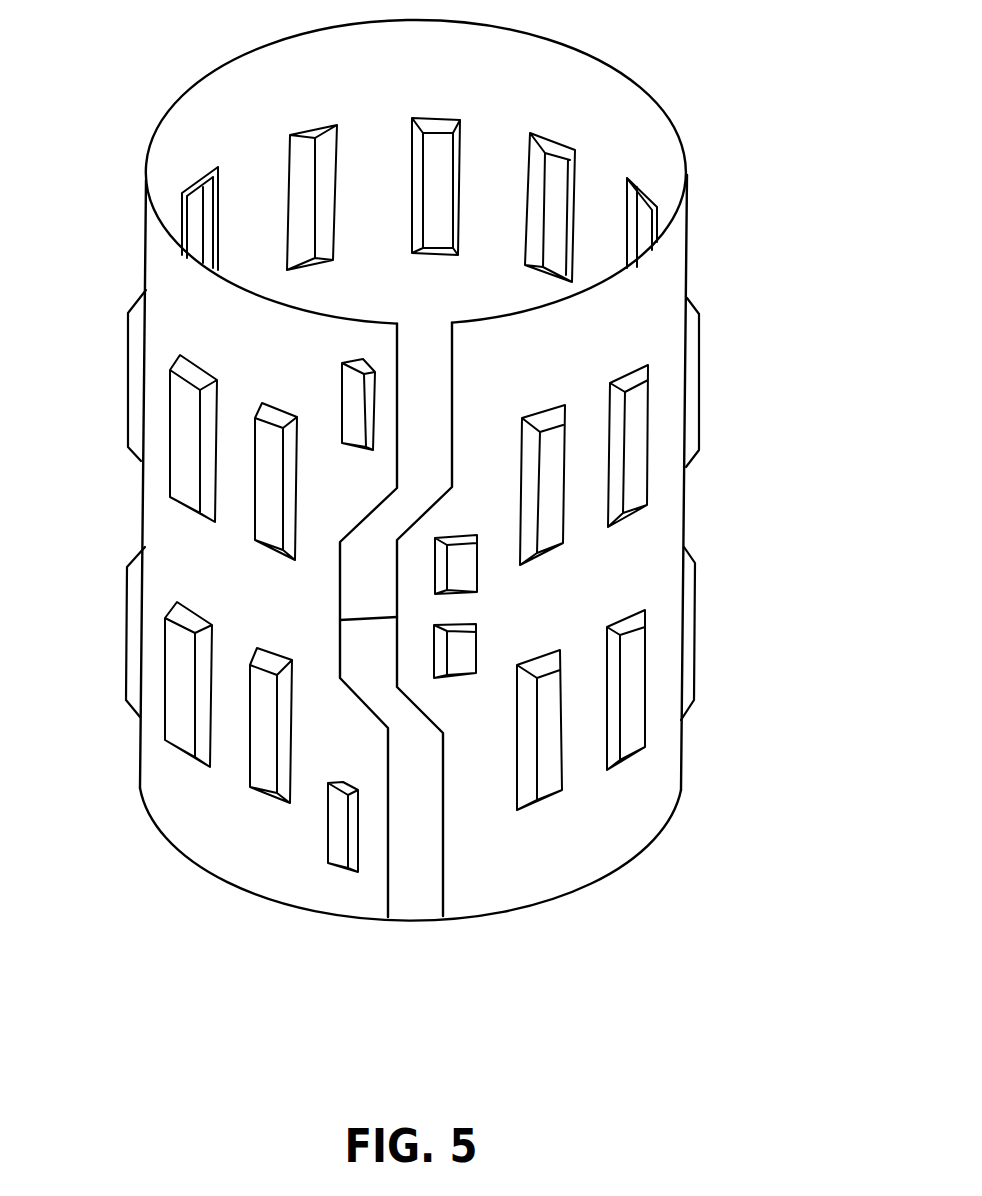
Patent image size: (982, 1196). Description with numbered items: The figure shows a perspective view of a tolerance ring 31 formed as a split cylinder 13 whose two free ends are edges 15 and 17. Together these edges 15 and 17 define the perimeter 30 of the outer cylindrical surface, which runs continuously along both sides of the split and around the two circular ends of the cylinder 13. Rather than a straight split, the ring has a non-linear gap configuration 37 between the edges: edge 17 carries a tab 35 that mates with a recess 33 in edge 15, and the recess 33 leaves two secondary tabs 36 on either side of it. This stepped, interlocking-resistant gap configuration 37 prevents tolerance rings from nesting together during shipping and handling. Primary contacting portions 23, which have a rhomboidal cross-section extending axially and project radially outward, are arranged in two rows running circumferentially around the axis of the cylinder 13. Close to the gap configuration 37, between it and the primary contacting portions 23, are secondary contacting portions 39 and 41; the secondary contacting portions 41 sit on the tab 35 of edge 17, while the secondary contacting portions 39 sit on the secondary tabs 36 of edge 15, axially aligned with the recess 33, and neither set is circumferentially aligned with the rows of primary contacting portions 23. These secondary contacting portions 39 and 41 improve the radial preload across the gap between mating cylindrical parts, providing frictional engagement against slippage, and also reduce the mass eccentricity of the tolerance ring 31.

The cylinder 13 is at (647, 313).
The edge 15 is at (384, 890).
The edge 17 is at (452, 888).
The primary contacting portions 23 is at (635, 488).
The perimeter 30 is at (253, 293).
The tolerance ring 31 is at (752, 220).
The recess 33 is at (353, 593).
The tab 35 is at (410, 542).
The secondary tabs 36 is at (380, 347).
The non-linear gap configuration 37 is at (342, 835).
The secondary contacting portions 39 is at (367, 682).
The secondary contacting portions 41 is at (460, 652).